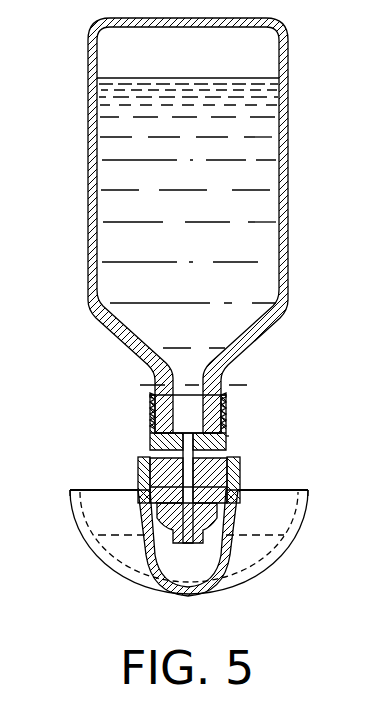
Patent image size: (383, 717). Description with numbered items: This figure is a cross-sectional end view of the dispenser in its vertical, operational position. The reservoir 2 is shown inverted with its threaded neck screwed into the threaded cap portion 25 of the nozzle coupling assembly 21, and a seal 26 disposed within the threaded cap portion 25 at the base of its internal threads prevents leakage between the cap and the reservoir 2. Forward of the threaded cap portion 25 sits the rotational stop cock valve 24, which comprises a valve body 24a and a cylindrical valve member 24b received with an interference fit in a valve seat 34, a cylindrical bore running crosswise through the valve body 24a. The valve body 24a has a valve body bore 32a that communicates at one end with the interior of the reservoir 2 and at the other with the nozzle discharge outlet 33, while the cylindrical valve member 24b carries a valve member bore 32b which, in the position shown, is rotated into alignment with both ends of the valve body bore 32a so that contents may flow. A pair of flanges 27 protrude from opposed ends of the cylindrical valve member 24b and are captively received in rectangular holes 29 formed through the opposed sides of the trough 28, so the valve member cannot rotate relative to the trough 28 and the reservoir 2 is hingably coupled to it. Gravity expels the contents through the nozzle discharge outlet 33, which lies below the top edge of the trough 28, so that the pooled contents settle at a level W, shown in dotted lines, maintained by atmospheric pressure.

The reservoir 2 is at (287, 83).
The nozzle coupling assembly 21 is at (238, 441).
The rotational stop cock valve 24 is at (134, 422).
The valve body 24a is at (150, 406).
The cylindrical valve member 24b is at (150, 441).
The threaded cap portion 25 is at (152, 397).
The seal 26 is at (230, 442).
The flanges 27 is at (139, 487).
The trough 28 is at (146, 587).
The rectangular holes 29 is at (141, 473).
The valve body bore 32a is at (233, 456).
The valve member bore 32b is at (165, 505).
The nozzle discharge outlet 33 is at (190, 545).
The valve seat 34 is at (241, 478).
The level W is at (300, 523).